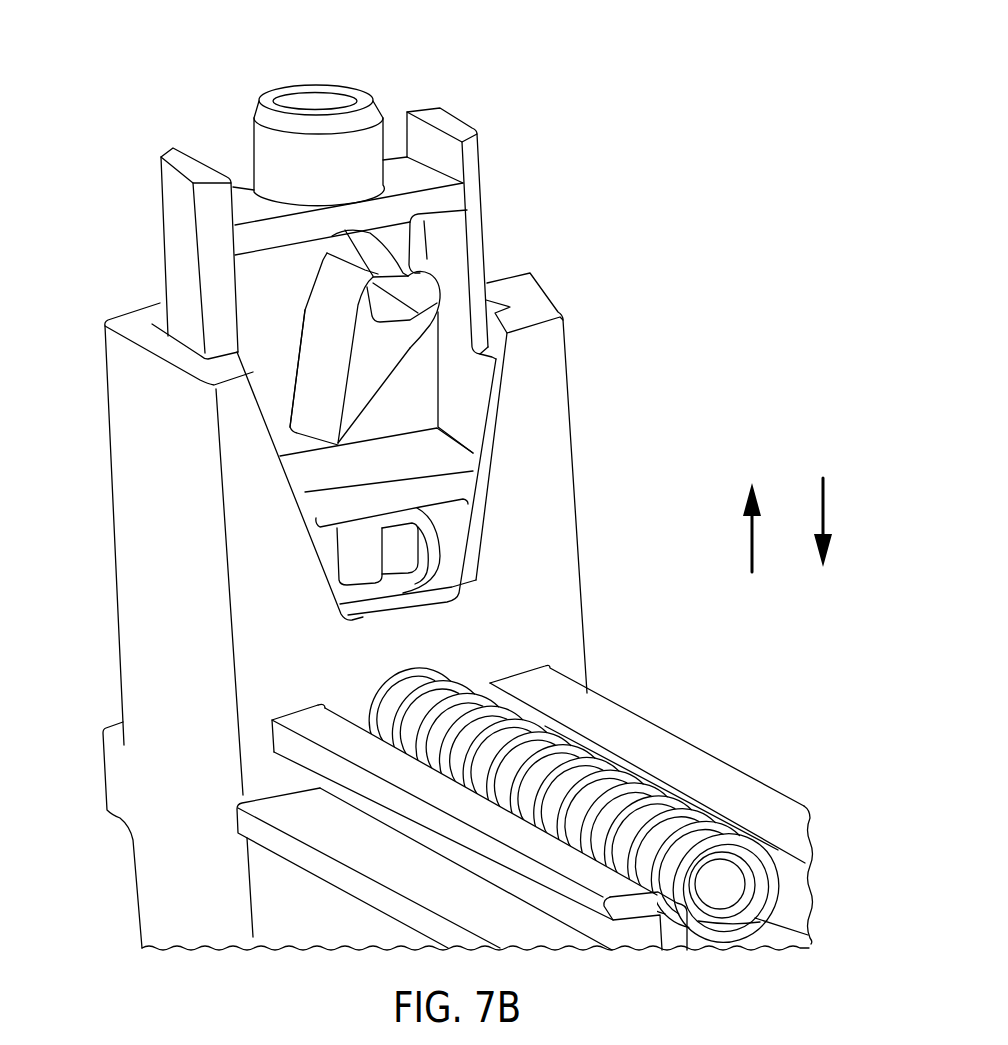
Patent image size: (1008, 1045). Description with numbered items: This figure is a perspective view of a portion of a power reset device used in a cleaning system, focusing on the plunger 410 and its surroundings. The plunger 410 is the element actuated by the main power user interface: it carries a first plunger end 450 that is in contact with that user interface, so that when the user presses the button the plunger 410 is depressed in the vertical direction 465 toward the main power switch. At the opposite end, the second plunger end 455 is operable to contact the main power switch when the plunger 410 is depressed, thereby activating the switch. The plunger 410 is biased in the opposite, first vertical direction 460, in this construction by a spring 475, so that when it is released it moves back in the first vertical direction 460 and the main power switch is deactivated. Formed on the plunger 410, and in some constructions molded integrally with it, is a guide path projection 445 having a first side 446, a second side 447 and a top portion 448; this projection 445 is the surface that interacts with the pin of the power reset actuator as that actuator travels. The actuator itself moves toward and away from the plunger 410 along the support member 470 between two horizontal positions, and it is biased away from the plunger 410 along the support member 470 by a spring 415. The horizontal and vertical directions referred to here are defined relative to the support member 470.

The plunger 410 is at (396, 66).
The spring 415 is at (605, 760).
The guide path projection 445 is at (382, 357).
The first side 446 is at (300, 393).
The second side 447 is at (430, 342).
The top portion 448 is at (398, 245).
The first plunger end 450 is at (167, 282).
The second plunger end 455 is at (447, 565).
The first vertical direction 460 is at (753, 542).
The vertical direction 465 is at (823, 540).
The support member 470 is at (762, 812).
The spring 475 is at (440, 547).